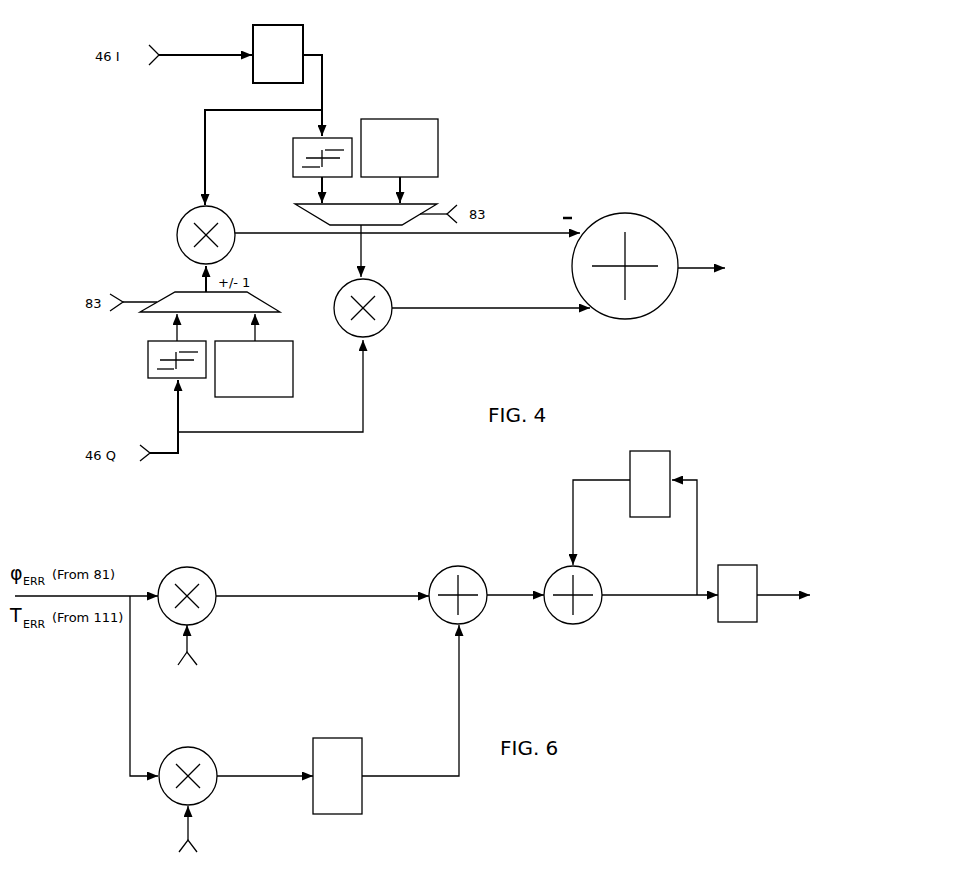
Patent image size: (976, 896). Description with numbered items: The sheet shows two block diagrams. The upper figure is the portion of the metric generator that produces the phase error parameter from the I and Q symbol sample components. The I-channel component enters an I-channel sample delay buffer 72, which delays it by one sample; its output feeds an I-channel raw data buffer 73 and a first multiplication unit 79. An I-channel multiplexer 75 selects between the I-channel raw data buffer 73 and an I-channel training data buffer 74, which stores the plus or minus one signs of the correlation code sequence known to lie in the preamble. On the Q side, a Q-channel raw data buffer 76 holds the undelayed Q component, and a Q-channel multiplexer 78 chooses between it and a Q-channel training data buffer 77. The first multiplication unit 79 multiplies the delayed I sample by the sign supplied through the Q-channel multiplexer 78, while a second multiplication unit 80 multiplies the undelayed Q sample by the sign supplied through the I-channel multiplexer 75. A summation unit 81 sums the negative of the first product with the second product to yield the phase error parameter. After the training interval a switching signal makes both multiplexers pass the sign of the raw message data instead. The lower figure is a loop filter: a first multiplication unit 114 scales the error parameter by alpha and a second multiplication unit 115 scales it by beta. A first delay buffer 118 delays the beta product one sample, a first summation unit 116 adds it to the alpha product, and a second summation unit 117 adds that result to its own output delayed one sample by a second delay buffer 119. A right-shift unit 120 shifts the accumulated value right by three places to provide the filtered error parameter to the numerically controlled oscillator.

In FIG. 4, the I-channel sample delay buffer 72 is at (305, 33).
In FIG. 4, the I-channel raw data buffer 73 is at (293, 158).
In FIG. 4, the I-channel training data buffer 74 is at (440, 127).
In FIG. 4, the I-channel multiplexer 75 is at (312, 214).
In FIG. 4, the Q-channel raw data buffer 76 is at (148, 359).
In FIG. 4, the Q-channel training data buffer 77 is at (285, 339).
In FIG. 4, the Q-channel multiplexer 78 is at (262, 301).
In FIG. 4, the first multiplication unit 79 is at (178, 227).
In FIG. 4, the second multiplication unit 80 is at (393, 327).
In FIG. 4, the summation unit 81 is at (649, 222).
In FIG. 6, the first multiplication unit 114 is at (208, 577).
In FIG. 6, the second multiplication unit 115 is at (197, 754).
In FIG. 6, the first summation unit 116 is at (450, 567).
In FIG. 6, the second summation unit 117 is at (583, 620).
In FIG. 6, the first delay buffer 118 is at (332, 738).
In FIG. 6, the second delay buffer 119 is at (668, 450).
In FIG. 6, the right-shift unit 120 is at (735, 562).